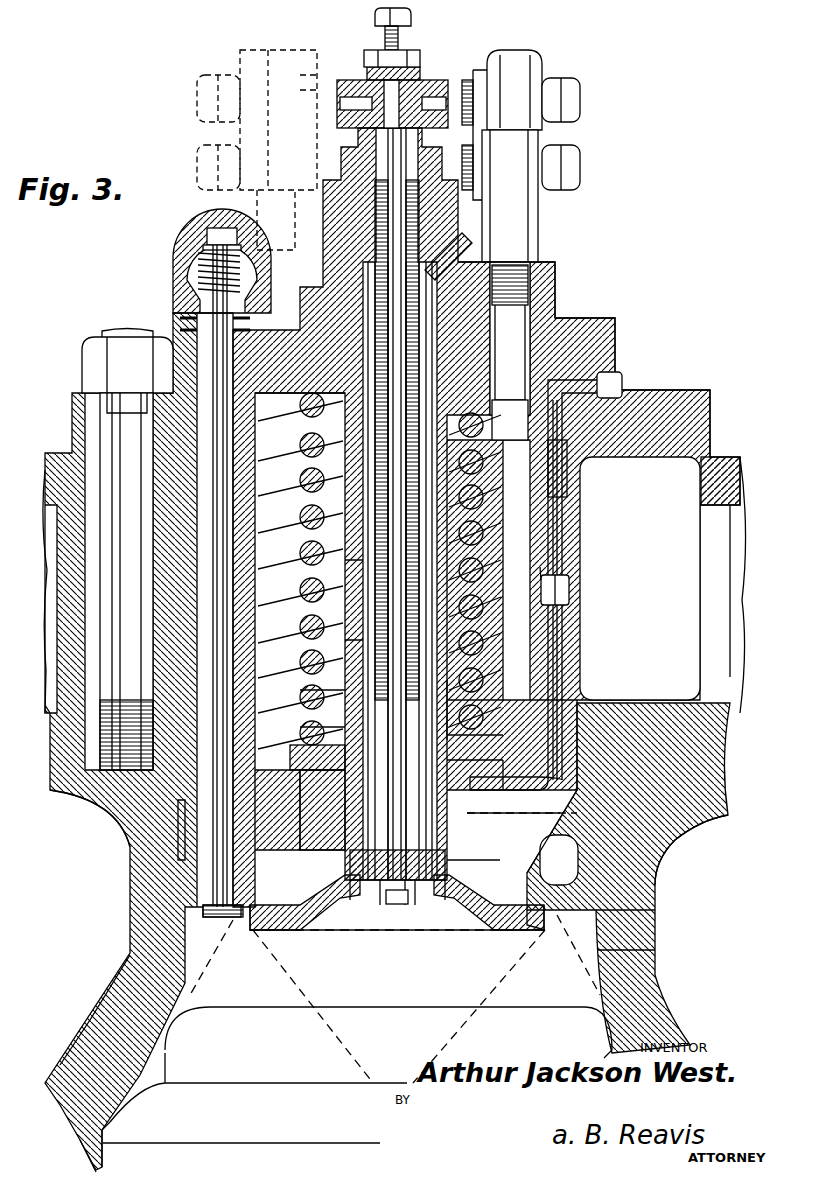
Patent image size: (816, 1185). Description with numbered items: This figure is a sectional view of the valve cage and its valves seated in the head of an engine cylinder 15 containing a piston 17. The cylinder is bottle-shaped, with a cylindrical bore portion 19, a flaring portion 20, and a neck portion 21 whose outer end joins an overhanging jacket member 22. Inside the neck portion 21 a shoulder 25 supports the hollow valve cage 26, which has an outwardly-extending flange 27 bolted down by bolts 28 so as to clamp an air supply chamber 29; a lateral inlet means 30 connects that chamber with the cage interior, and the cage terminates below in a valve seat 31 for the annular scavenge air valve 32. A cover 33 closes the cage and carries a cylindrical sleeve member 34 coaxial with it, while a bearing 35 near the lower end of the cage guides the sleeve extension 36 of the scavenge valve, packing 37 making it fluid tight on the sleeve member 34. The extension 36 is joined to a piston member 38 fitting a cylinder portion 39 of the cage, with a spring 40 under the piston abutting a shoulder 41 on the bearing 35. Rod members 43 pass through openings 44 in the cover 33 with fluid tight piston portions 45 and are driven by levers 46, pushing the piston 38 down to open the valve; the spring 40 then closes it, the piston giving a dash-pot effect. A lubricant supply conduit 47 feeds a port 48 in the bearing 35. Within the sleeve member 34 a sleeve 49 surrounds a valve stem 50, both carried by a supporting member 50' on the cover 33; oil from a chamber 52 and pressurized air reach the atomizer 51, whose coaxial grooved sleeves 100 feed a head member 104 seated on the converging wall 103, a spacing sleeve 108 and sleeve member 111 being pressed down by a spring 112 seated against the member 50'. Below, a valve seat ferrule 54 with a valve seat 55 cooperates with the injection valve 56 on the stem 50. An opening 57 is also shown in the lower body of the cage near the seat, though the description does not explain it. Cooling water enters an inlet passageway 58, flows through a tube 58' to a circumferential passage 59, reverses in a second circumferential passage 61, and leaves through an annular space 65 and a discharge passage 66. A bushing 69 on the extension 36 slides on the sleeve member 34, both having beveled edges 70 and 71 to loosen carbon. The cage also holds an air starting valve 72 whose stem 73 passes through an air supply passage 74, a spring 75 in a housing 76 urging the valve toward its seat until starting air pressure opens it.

The cylinder 15 is at (105, 1022).
The piston 17 is at (258, 1122).
The cylindrical bore portion 19 is at (98, 1158).
The flaring portion 20 is at (133, 1070).
The neck portion 21 is at (600, 950).
The overhanging jacket member 22 is at (693, 803).
The shoulder 25 is at (600, 907).
The valve cage 26 is at (590, 787).
The flange 27 is at (704, 399).
The bolt 28 is at (125, 445).
The air supply chamber 29 is at (52, 478).
The lateral inlet means 30 is at (640, 578).
The valve seat 31 is at (555, 905).
The scavenge air valve 32 is at (297, 918).
The cover 33 is at (605, 320).
The sleeve member 34 is at (440, 508).
The bearing 35 is at (306, 848).
The sleeve extension 36 is at (462, 683).
The packing 37 is at (443, 827).
The piston member 38 is at (556, 428).
The cylinder portion 39 is at (530, 462).
The spring 40 is at (540, 570).
The shoulder 41 is at (460, 742).
The rod member 43 is at (258, 150).
The opening 44 is at (545, 305).
The piston portion 45 is at (548, 264).
The lever 46 is at (290, 78).
The lubricant supply conduit 47 is at (502, 792).
The port 48 is at (522, 795).
The sleeve 49 is at (405, 623).
The valve stem 50 is at (456, 571).
The supporting member 50' is at (353, 139).
The atomizer 51 is at (357, 807).
The chamber 52 is at (455, 228).
The valve seat ferrule 54 is at (418, 903).
The valve seat 55 is at (385, 880).
The valve 56 is at (395, 905).
The port 57 is at (559, 860).
The inlet passageway 58 is at (498, 590).
The tube 58' is at (484, 714).
The circumferential passage 59 is at (370, 880).
The circumferential passage 61 is at (330, 838).
The annular space 65 is at (335, 755).
The discharge passage 66 is at (385, 612).
The bushing 69 is at (473, 859).
The bevel 70 is at (395, 979).
The bevel 71 is at (389, 887).
The air starting valve 72 is at (226, 917).
The stem 73 is at (215, 613).
The air supply passage 74 is at (205, 536).
The spring 75 is at (200, 255).
The housing 76 is at (175, 240).
The atomizer sleeve 100 is at (345, 727).
The converging wall 103 is at (372, 800).
The head member 104 is at (378, 813).
The spacing sleeve 108 is at (340, 690).
The sleeve member 111 is at (380, 500).
The spring 112 is at (265, 342).